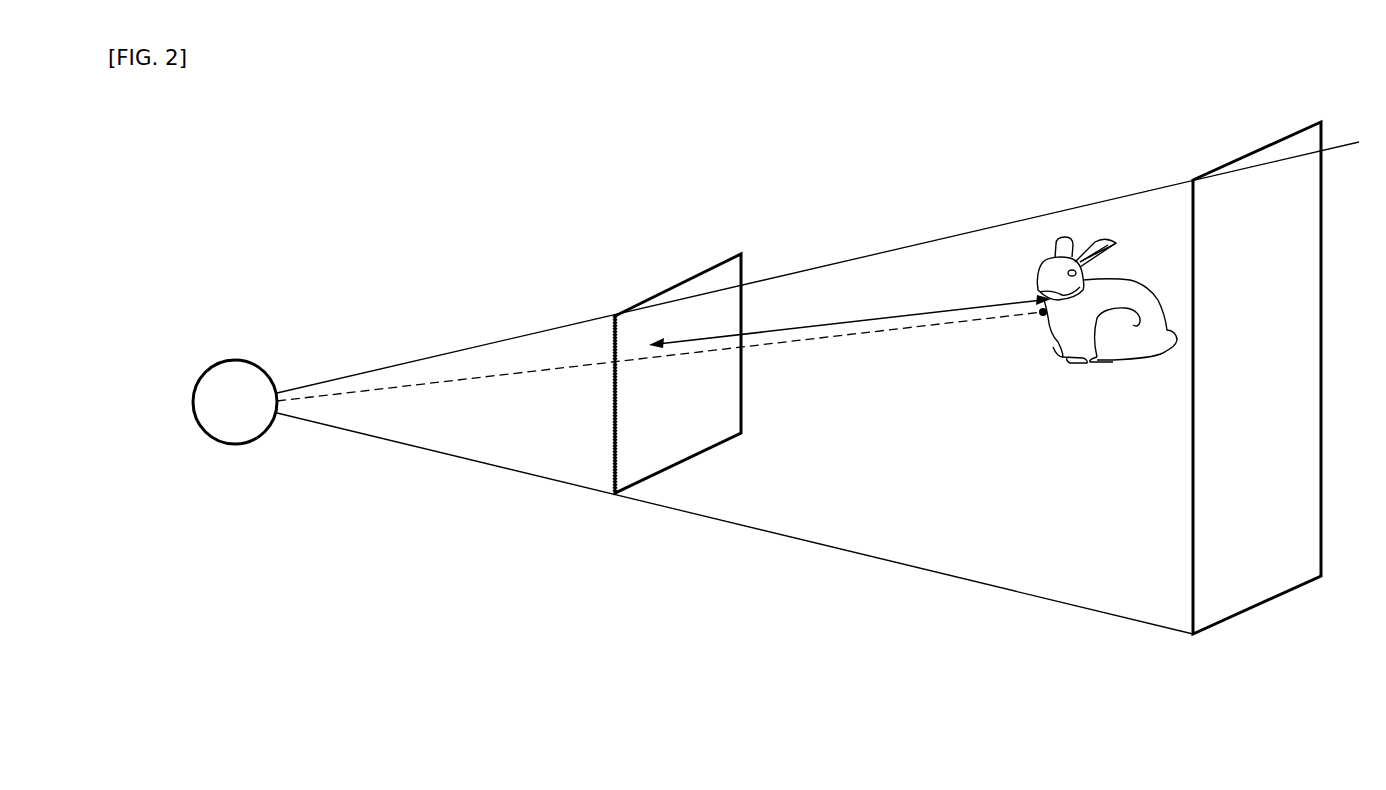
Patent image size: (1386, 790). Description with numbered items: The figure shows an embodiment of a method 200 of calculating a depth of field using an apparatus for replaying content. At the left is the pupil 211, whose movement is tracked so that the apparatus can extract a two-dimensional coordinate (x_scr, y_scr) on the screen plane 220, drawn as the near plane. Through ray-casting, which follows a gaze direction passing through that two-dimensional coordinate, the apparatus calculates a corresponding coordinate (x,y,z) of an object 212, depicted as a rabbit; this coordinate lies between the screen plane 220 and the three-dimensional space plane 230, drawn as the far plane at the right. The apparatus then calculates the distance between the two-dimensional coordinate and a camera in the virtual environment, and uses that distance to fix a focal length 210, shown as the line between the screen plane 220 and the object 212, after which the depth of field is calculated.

The rendering view frustum / scene 200 is at (740, 133).
The focal length 210 is at (850, 319).
The pupil 211 is at (237, 360).
The object 212 is at (1098, 363).
The screen plane 220 is at (677, 416).
The three-dimensional space plane 230 is at (1253, 411).